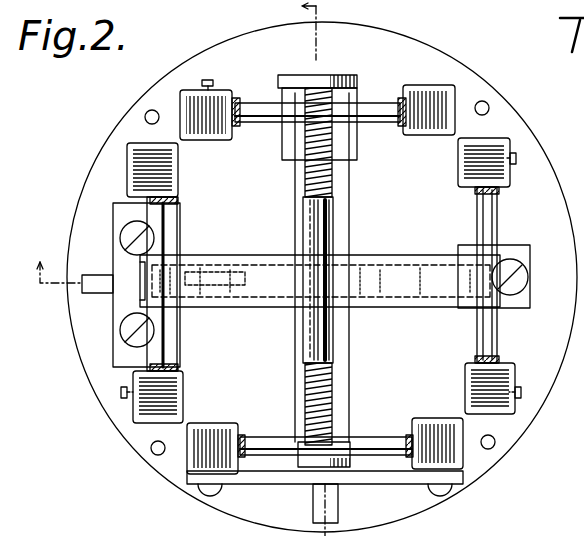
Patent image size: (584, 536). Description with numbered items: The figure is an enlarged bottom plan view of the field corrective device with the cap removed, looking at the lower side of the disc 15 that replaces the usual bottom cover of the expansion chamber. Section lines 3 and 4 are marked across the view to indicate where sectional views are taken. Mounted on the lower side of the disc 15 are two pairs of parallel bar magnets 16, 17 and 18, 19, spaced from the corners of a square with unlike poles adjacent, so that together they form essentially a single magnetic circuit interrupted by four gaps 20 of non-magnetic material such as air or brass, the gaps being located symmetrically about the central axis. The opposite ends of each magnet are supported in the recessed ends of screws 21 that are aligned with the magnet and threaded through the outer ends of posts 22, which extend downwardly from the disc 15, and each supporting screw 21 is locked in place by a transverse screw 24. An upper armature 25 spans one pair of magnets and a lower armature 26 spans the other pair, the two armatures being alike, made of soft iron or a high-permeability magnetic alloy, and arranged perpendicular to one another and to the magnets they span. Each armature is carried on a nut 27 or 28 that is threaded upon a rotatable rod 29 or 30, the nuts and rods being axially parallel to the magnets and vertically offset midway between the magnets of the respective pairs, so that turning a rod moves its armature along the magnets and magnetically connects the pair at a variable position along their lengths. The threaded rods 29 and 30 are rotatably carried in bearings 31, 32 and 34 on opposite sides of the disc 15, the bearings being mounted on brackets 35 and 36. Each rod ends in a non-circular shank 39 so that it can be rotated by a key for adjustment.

The section line 3- 3 is at (300, 30).
The section line 4- 4 is at (57, 260).
The disc 15 is at (518, 128).
The bar magnet 16 is at (250, 125).
The bar magnet 17 is at (260, 445).
The bar magnet 18 is at (178, 218).
The bar magnet 19 is at (492, 213).
The gap 20 is at (166, 128).
The screw 21 is at (238, 102).
The post 22 is at (222, 92).
The transverse screw 24 is at (206, 82).
The upper armature 25 is at (348, 218).
The lower armature 26 is at (413, 307).
The nut 27 is at (268, 305).
The nut 28 is at (312, 232).
The threaded rod 29 is at (213, 272).
The threaded rod 30 is at (337, 180).
The bearing 31 is at (127, 305).
The bearing 32 is at (518, 290).
The bearing 34 is at (365, 482).
The bracket 35 is at (337, 76).
The bracket 36 is at (530, 252).
The non-circular shank 39 is at (313, 510).